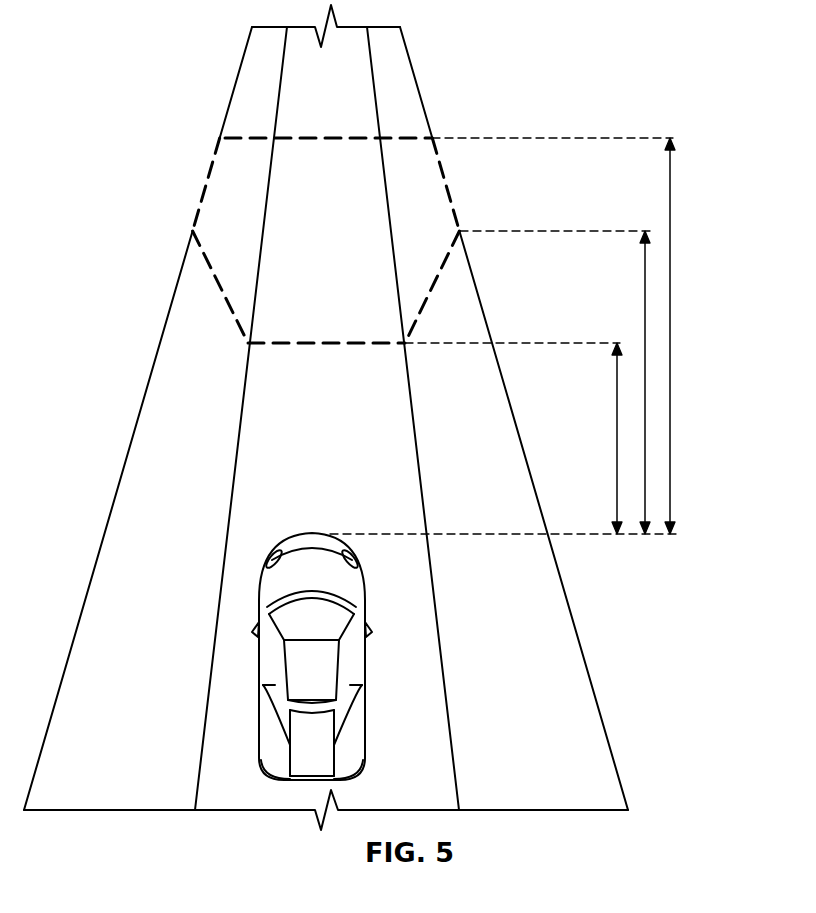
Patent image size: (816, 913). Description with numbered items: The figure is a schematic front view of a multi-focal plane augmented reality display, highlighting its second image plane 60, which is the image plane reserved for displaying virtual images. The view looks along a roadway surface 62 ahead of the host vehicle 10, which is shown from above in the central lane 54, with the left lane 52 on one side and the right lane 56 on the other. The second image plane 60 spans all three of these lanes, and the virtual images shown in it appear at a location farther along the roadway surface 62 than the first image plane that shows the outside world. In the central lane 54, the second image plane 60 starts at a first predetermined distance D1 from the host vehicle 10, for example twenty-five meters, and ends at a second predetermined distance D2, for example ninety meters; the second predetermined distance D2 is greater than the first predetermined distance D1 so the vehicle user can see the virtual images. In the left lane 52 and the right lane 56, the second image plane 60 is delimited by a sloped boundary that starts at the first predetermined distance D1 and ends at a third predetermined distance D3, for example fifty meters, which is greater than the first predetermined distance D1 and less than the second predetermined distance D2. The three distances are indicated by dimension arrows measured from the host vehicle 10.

The host vehicle 10 is at (293, 578).
The left lane 52 is at (155, 440).
The central lane 54 is at (390, 493).
The right lane 56 is at (490, 418).
The second image plane 60 is at (243, 135).
The roadway surface 62 is at (302, 410).
The first predetermined distance D1 is at (617, 442).
The second predetermined distance D2 is at (670, 250).
The third predetermined distance D3 is at (645, 365).